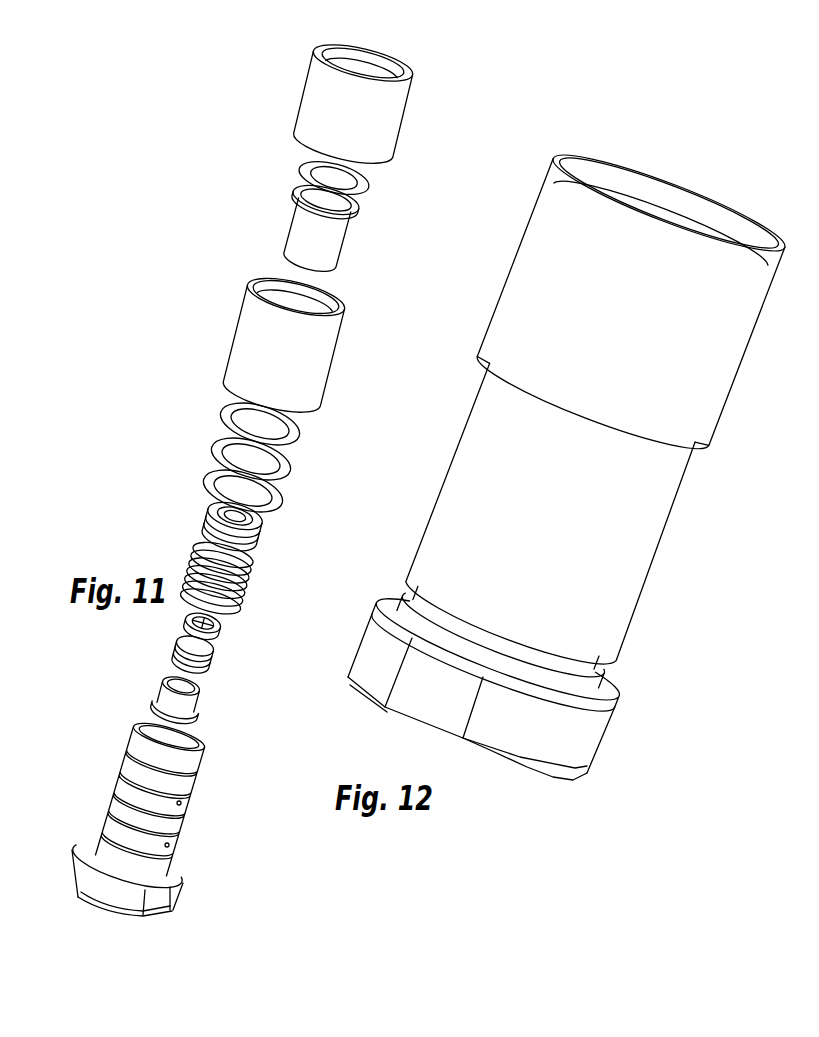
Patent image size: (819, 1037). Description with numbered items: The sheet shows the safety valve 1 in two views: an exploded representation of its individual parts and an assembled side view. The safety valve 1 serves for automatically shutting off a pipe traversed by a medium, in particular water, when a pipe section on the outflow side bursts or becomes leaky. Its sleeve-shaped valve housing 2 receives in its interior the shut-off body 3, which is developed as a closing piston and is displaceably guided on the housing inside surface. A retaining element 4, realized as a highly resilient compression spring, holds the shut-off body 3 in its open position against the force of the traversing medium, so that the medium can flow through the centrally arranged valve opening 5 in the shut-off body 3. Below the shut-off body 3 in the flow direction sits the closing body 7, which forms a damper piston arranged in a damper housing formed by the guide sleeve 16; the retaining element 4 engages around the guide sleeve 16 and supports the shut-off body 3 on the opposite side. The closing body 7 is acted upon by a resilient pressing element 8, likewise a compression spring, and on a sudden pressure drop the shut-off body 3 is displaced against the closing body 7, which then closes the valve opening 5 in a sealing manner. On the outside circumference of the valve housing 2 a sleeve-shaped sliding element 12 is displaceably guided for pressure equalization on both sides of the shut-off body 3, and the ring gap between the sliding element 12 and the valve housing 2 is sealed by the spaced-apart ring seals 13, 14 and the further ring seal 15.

In FIG. 11, the safety valve 1 is at (420, 181).
In FIG. 12, the safety valve 1 is at (752, 166).
In FIG. 11, the valve housing 2 is at (367, 141).
In FIG. 12, the valve housing 2 is at (560, 750).
In FIG. 11, the shut-off body 3 is at (263, 533).
In FIG. 11, the retaining element 4 is at (246, 580).
In FIG. 11, the valve opening 5 is at (243, 500).
In FIG. 11, the closing body 7 is at (224, 633).
In FIG. 11, the pressing element 8 is at (216, 663).
In FIG. 11, the sliding element 12 is at (298, 342).
In FIG. 12, the sliding element 12 is at (575, 550).
In FIG. 11, the ring seal 13 is at (297, 435).
In FIG. 11, the ring seal 14 is at (288, 463).
In FIG. 11, the ring seal 15 is at (285, 493).
In FIG. 11, the guide sleeve 16 is at (193, 708).